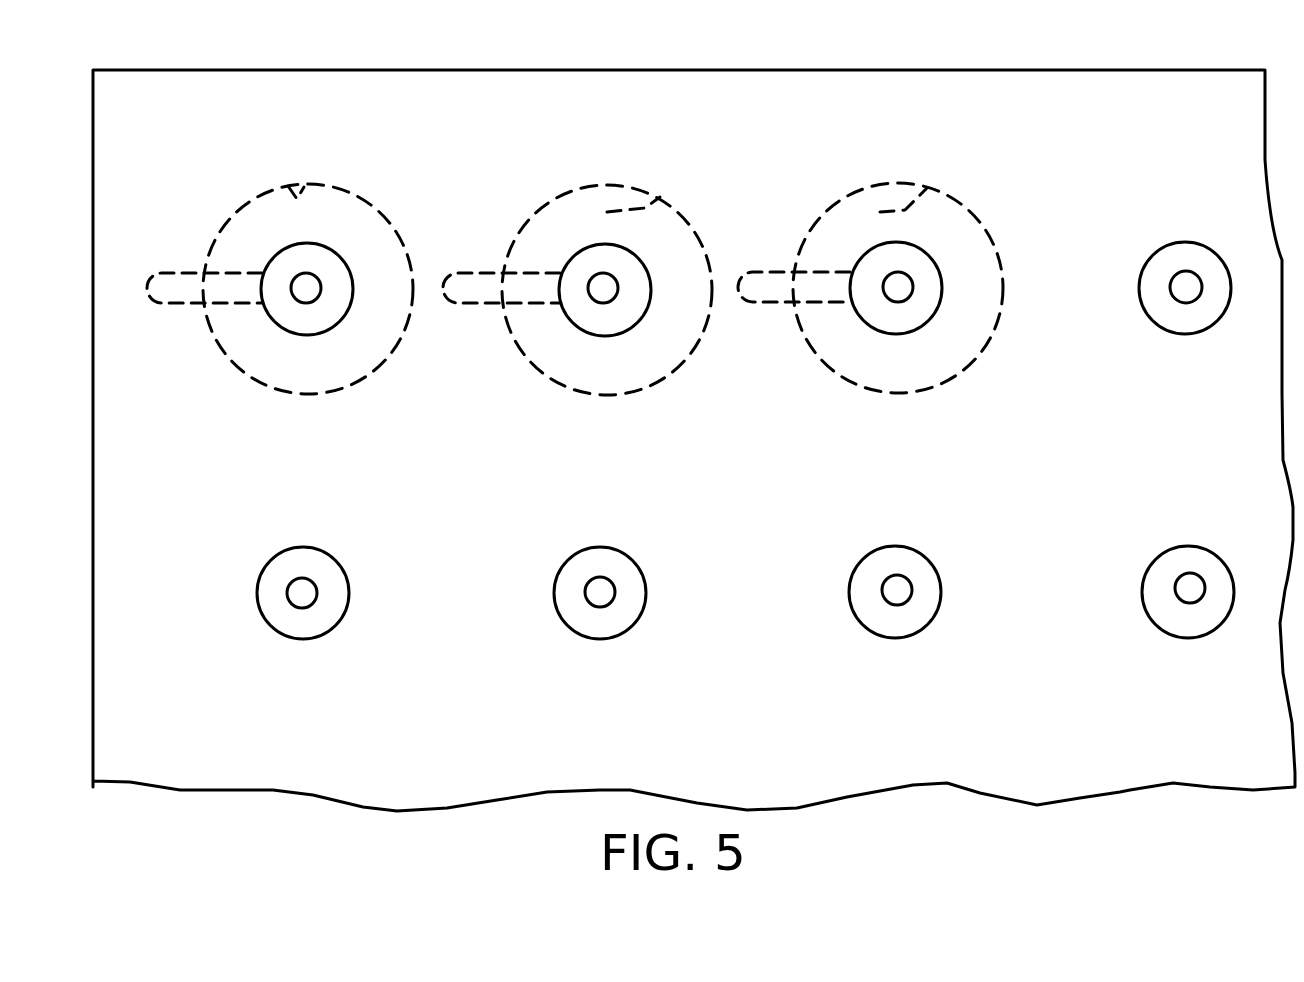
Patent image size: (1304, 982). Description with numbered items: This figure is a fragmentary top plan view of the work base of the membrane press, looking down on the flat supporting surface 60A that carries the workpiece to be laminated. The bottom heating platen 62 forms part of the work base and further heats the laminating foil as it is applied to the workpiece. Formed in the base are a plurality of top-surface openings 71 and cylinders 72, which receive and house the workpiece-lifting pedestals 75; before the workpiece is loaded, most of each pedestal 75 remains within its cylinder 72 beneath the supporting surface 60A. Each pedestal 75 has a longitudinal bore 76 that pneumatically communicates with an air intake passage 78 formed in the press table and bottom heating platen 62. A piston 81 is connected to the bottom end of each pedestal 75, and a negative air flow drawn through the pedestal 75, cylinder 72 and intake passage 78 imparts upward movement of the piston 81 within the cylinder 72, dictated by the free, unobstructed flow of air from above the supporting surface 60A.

The bottom heating platen 62 is at (167, 72).
The flat supporting surface 60A is at (1100, 422).
The top-surface openings 71 is at (742, 450).
The workpiece-lifting pedestals 75 is at (311, 257).
The longitudinal bore 76 is at (305, 302).
The cylinders 72 is at (282, 186).
The air intake passage 78 is at (175, 268).
The piston 81 is at (286, 366).